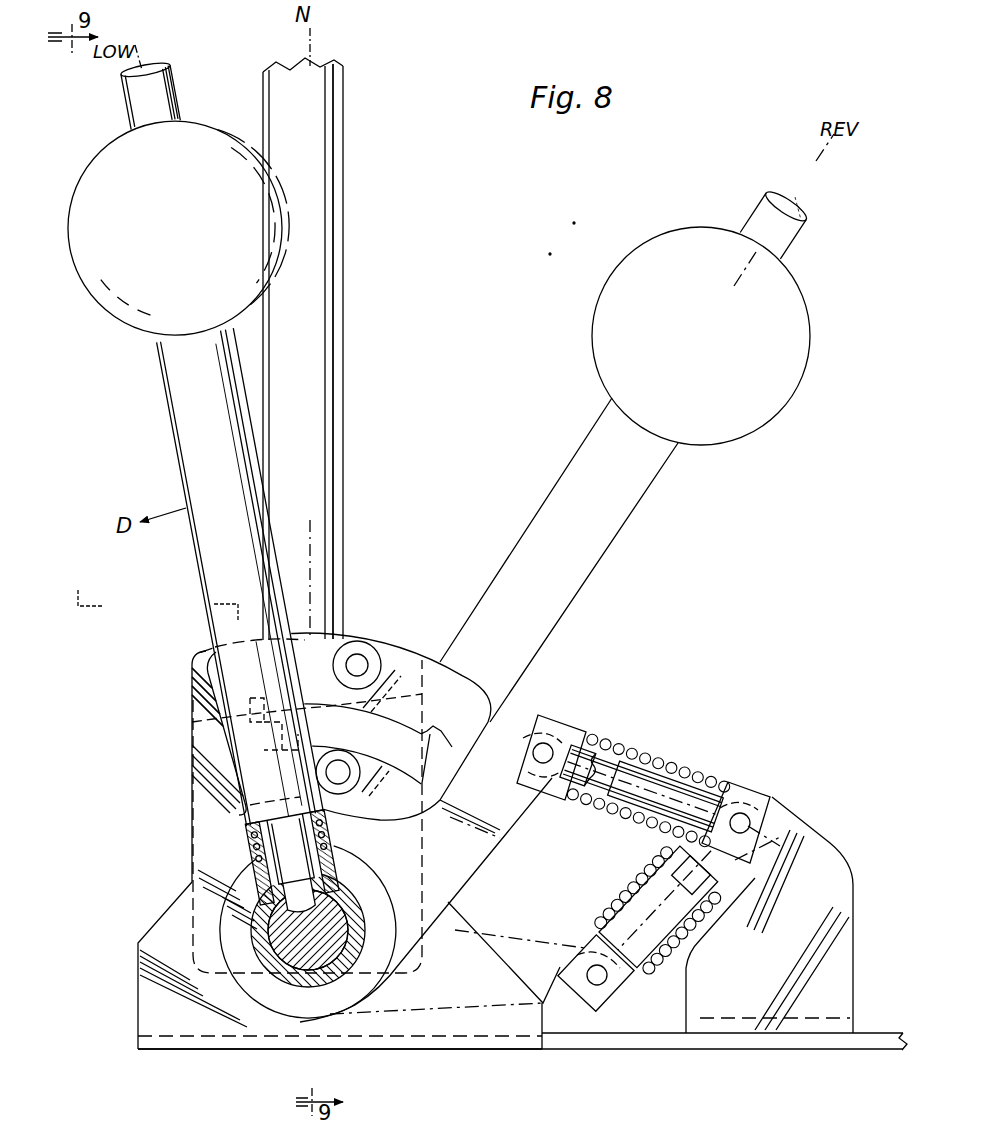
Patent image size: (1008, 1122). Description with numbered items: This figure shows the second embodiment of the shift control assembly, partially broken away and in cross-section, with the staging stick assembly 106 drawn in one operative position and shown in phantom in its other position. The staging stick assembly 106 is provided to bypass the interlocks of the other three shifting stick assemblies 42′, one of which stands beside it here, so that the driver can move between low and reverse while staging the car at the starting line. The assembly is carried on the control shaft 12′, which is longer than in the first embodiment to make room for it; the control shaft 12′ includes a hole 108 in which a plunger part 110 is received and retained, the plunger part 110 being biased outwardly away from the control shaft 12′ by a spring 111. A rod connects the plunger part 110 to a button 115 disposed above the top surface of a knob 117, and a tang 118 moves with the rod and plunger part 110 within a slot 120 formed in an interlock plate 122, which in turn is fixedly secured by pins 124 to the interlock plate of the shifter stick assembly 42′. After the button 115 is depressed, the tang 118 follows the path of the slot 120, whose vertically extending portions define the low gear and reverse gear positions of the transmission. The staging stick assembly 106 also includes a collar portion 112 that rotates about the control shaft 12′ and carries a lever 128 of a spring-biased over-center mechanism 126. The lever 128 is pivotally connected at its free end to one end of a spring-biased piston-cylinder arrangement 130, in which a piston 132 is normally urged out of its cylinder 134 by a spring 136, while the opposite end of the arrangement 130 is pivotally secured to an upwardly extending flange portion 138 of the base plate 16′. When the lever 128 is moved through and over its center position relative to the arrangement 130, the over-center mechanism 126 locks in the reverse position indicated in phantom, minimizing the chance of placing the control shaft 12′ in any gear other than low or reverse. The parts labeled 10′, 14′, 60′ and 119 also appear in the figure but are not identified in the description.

The base plate 10′ is at (780, 1052).
The base plate 16′ is at (228, 1052).
The housing 14′ is at (186, 895).
The tang 118 is at (195, 722).
The housing wall / detent 119 is at (195, 698).
The slot 120 is at (392, 728).
The interlock plate 122 is at (392, 672).
The pins 124 is at (368, 656).
The shifting stick assembly 42′ is at (352, 316).
The rod sleeve 60′ is at (345, 355).
The staging stick assembly 106 is at (214, 609).
The knob 117 is at (196, 122).
The button 115 is at (160, 72).
The hole 108 is at (360, 942).
The collar portion 112 is at (362, 962).
The control shaft 12′ is at (360, 980).
The plunger part 110 is at (268, 824).
The spring 111 is at (262, 844).
The lever 128 is at (496, 848).
The over-center mechanism 126 is at (643, 844).
The spring-biased piston-cylinder arrangement 130 is at (704, 768).
The piston 132 is at (652, 776).
The cylinder 134 is at (624, 760).
The spring 136 is at (589, 736).
The upwardly extending flange portion 138 is at (818, 842).